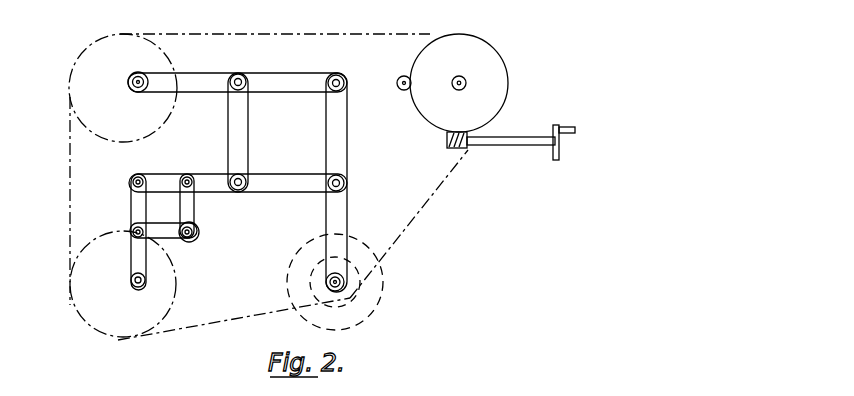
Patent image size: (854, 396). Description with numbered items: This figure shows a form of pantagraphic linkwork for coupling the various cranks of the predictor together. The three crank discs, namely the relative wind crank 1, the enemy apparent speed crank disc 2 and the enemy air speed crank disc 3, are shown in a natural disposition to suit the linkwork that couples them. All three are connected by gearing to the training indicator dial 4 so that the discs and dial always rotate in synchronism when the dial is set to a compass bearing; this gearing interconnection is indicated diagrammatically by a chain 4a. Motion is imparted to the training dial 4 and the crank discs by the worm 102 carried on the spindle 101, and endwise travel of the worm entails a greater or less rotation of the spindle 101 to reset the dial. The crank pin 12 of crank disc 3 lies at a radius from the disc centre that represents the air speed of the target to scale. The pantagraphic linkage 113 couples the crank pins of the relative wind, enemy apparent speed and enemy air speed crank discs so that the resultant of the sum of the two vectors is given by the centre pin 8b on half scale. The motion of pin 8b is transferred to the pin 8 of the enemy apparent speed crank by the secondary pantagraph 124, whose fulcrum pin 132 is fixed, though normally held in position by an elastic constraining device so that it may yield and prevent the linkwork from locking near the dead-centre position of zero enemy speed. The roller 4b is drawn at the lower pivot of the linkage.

The relative wind crank 1 is at (381, 272).
The enemy apparent speed crank disc 2 is at (128, 323).
The enemy air speed crank disc 3 is at (75, 66).
The training indicator dial 4 is at (490, 73).
The chain 4a is at (408, 233).
The roller pivot 4b is at (345, 297).
The pin 8 is at (132, 283).
The centre pin 8b is at (247, 176).
The crank pin 12 is at (135, 76).
The spindle 101 is at (505, 147).
The worm 102 is at (465, 155).
The pantagraphic linkage 113 is at (340, 152).
The pantagraph 124 is at (190, 205).
The fulcrum pin 132 is at (195, 245).